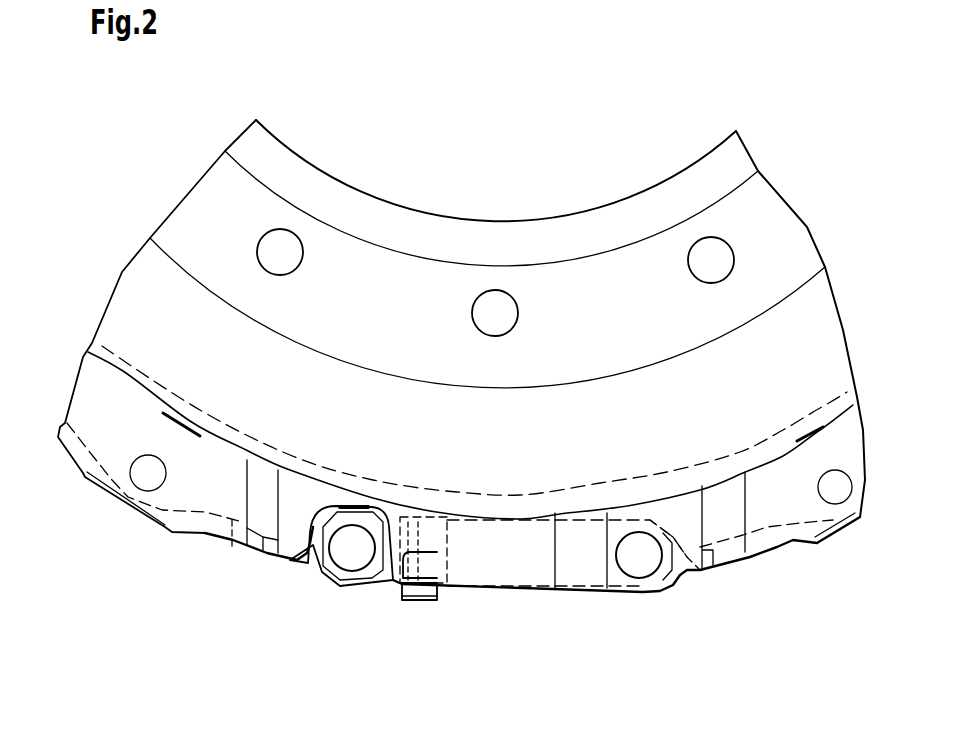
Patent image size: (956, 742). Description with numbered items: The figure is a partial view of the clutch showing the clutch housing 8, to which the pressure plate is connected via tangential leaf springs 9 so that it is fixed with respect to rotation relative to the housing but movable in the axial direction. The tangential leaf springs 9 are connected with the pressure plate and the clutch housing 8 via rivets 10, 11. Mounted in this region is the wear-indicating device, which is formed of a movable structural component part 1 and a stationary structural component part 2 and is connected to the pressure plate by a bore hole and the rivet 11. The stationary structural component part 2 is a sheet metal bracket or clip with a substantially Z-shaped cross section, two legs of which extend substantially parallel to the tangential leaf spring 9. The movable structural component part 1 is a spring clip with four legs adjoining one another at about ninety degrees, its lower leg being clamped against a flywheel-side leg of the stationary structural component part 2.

The movable structural component part 1 is at (433, 594).
The stationary structural component part 2 is at (452, 578).
The clutch housing 8 is at (507, 449).
The tangential leaf springs 9 is at (687, 557).
The rivets 10 is at (648, 563).
The rivet 11 is at (348, 552).